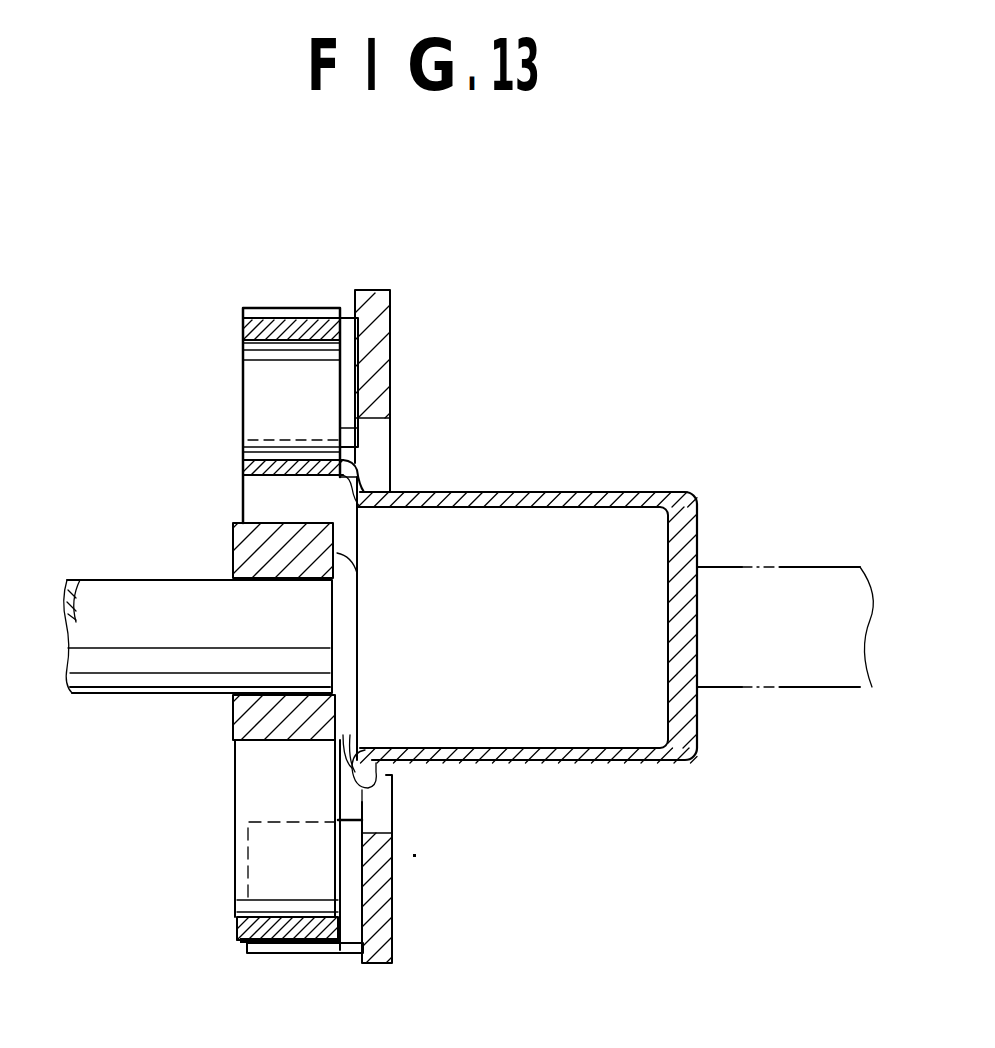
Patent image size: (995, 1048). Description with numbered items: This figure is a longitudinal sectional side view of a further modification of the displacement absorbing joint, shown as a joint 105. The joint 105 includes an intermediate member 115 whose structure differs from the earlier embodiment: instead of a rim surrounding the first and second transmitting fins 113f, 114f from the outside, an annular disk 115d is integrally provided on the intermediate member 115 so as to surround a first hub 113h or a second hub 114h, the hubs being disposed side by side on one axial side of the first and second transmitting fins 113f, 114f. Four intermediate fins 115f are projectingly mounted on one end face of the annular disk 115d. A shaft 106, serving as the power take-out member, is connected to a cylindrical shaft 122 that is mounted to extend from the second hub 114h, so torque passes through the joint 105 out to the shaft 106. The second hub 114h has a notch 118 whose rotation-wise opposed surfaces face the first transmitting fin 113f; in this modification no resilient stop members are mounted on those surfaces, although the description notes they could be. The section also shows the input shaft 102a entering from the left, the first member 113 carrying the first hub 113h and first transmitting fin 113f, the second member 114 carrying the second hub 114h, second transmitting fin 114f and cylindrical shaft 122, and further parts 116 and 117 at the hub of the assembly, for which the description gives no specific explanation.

The input shaft 102a is at (125, 597).
The joint 105 is at (527, 320).
The shaft 106 is at (797, 565).
The hub 113 is at (232, 537).
The first transmitting fin 113f is at (237, 928).
The first hub 113h is at (280, 735).
The cup-shaped member 114 is at (418, 492).
The second transmitting fin 114f is at (243, 340).
The second hub 114h is at (243, 467).
The intermediate member 115 is at (372, 290).
The annular disk 115d is at (377, 337).
The intermediate fin 115f is at (348, 308).
The retaining ring 116 is at (245, 937).
The friction member 117 is at (243, 327).
The notch 118 is at (343, 783).
The cylindrical shaft 122 is at (570, 492).